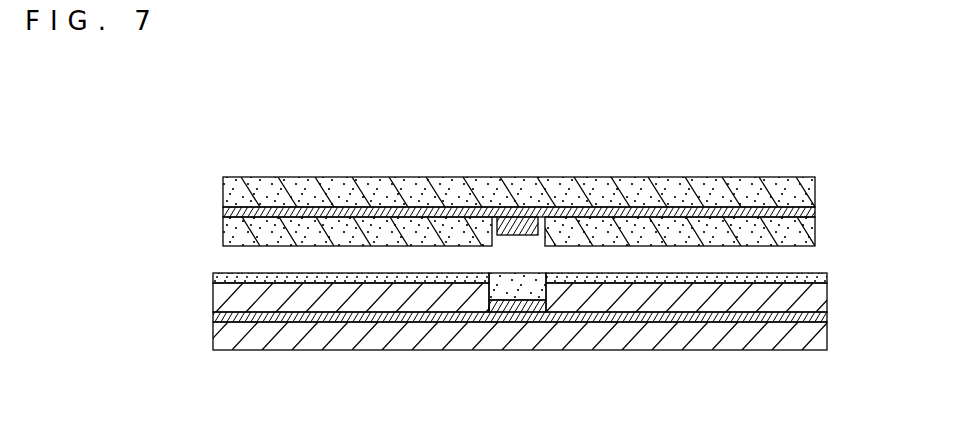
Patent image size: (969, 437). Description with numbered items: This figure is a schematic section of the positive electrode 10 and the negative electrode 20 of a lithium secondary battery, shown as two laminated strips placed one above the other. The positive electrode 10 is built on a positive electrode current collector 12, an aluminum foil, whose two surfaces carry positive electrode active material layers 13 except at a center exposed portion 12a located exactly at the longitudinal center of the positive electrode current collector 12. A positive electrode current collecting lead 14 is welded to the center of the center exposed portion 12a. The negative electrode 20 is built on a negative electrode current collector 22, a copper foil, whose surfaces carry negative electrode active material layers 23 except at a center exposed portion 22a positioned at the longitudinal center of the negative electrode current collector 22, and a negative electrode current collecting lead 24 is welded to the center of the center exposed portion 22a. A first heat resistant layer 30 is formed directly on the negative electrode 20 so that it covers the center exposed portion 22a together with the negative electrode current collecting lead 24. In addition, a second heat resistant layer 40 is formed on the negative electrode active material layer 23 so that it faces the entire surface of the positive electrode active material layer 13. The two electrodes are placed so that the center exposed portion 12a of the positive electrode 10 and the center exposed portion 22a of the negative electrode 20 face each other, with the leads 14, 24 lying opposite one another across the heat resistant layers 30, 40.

The positive electrode 10 is at (517, 173).
The positive electrode current collector 12 is at (816, 212).
The center exposed portion 12a is at (476, 221).
The positive electrode active material layer 13 is at (223, 184).
The positive electrode current collecting lead 14 is at (522, 226).
The negative electrode 20 is at (510, 338).
The negative electrode current collector 22 is at (213, 318).
The center exposed portion 22a is at (488, 304).
The negative electrode active material layer 23 is at (813, 298).
The negative electrode current collecting lead 24 is at (532, 308).
The first heat resistant layer 30 is at (515, 284).
The second heat resistant layer 40 is at (213, 278).